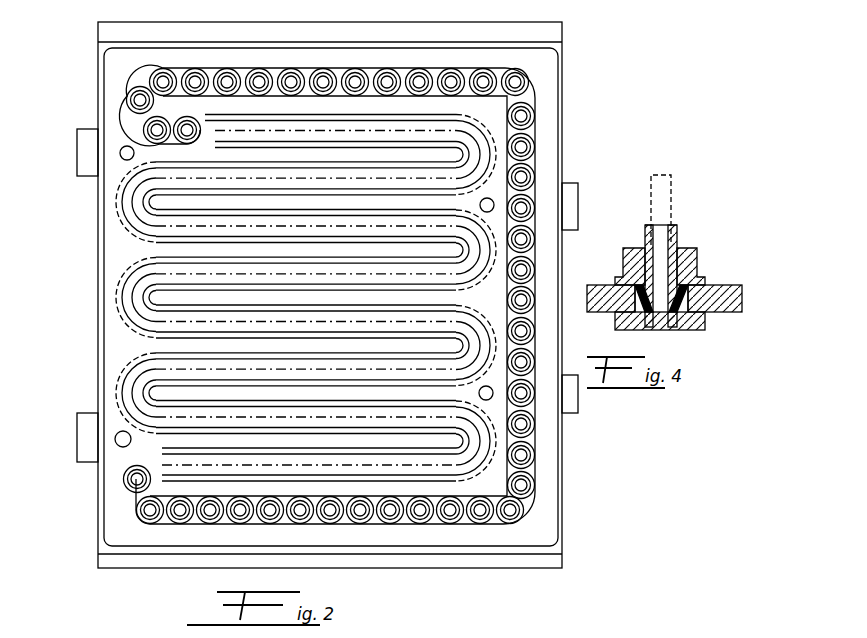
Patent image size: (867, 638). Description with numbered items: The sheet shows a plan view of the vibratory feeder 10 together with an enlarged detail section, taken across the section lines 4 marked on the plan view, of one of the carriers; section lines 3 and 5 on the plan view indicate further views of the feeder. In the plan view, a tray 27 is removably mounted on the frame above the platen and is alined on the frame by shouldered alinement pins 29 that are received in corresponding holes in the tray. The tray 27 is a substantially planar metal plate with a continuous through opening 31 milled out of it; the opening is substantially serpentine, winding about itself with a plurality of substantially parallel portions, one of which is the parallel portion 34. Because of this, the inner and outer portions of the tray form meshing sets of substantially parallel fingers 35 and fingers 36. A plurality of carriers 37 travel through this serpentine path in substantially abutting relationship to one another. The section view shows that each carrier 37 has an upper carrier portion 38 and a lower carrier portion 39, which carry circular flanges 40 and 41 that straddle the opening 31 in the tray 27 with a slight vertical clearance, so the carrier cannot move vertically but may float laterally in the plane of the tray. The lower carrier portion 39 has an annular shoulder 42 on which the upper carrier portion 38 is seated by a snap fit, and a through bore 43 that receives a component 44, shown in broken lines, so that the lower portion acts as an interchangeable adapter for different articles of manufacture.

In FIG. 2, the vibratory feeder 10 is at (576, 84).
In FIG. 2, the tray 27 is at (552, 133).
In FIG. 4, the tray 27 is at (608, 290).
In FIG. 2, the alinement pin 29 is at (118, 446).
In FIG. 2, the through opening 31 is at (420, 512).
In FIG. 4, the through opening 31 is at (633, 300).
In FIG. 2, the parallel portion 34 is at (432, 467).
In FIG. 2, the fingers of inner portion 35 is at (460, 448).
In FIG. 2, the fingers of outer portion 36 is at (150, 296).
In FIG. 2, the carrier 37 is at (538, 152).
In FIG. 4, the carrier 37 is at (689, 231).
In FIG. 4, the upper carrier portion 38 is at (681, 244).
In FIG. 4, the lower carrier portion 39 is at (635, 334).
In FIG. 4, the circular flange of upper carrier portion 40 is at (705, 283).
In FIG. 4, the circular flange of lower carrier portion 41 is at (705, 323).
In FIG. 4, the annular shoulder 42 is at (678, 262).
In FIG. 4, the through bore 43 is at (652, 322).
In FIG. 4, the component 44 is at (675, 173).
In FIG. 2, the section line 3- 3 is at (640, 393).
In FIG. 2, the section line 4- 4 is at (547, 334).
In FIG. 2, the section line 5- 5 is at (157, 141).